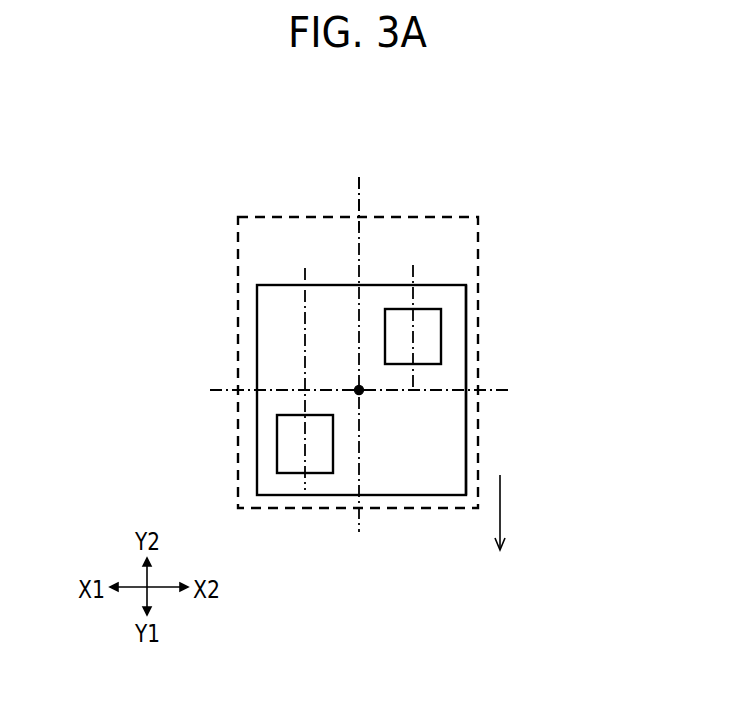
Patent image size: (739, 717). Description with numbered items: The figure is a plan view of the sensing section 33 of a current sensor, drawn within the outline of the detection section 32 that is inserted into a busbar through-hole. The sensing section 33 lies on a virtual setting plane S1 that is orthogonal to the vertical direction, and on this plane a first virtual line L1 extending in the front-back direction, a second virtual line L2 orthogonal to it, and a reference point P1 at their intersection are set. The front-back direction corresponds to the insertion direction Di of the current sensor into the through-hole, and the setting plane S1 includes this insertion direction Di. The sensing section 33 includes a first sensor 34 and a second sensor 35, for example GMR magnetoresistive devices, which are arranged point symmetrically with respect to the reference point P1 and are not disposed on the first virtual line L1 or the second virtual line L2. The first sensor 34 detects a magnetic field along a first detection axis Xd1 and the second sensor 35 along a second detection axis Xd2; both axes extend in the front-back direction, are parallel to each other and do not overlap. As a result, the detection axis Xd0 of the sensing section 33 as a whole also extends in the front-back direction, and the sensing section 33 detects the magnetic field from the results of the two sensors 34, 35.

The detection section 32 is at (462, 247).
The sensing section 33 is at (257, 333).
The first sensor 34 is at (285, 473).
The second sensor 35 is at (441, 350).
The setting plane S1 is at (466, 315).
The reference point P1 is at (362, 393).
The first virtual line L1 is at (362, 522).
The second virtual line L2 is at (228, 393).
The detection axis Xd0 is at (359, 188).
The first detection axis Xd1 is at (303, 272).
The second detection axis Xd2 is at (413, 274).
The insertion direction Di is at (515, 512).